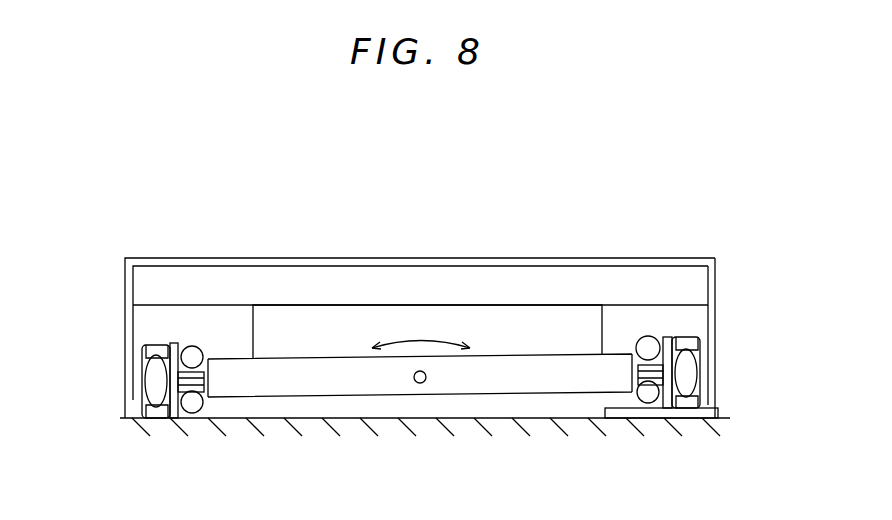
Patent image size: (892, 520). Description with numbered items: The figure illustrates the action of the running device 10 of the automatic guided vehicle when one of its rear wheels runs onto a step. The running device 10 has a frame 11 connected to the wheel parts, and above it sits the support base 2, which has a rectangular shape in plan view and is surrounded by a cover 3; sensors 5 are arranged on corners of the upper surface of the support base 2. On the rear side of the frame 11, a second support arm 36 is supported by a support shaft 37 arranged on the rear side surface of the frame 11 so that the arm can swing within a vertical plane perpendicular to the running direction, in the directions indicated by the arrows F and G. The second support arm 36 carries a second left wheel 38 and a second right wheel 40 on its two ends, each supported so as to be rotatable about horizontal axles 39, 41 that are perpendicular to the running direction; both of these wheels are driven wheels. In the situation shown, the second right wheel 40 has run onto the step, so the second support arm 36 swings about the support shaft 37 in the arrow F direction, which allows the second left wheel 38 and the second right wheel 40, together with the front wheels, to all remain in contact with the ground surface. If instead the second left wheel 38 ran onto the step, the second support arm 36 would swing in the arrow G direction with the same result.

The running device 10 is at (291, 195).
The support base 2 is at (630, 258).
The cover 3 is at (715, 318).
The frame 11 is at (342, 305).
The second support arm 36 is at (357, 390).
The support shaft 37 is at (426, 382).
The second left wheel 38 is at (143, 418).
The horizontal axle 39 is at (195, 418).
The second right wheel 40 is at (698, 410).
The horizontal axle 41 is at (638, 418).
The sensor 5 is at (622, 410).